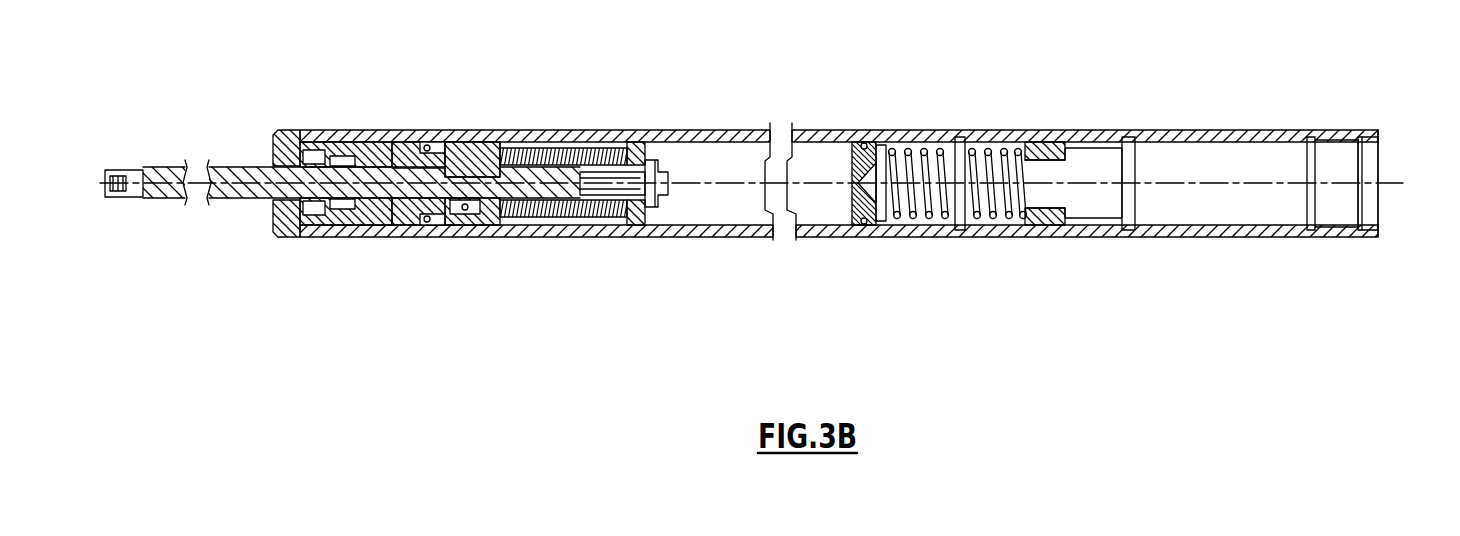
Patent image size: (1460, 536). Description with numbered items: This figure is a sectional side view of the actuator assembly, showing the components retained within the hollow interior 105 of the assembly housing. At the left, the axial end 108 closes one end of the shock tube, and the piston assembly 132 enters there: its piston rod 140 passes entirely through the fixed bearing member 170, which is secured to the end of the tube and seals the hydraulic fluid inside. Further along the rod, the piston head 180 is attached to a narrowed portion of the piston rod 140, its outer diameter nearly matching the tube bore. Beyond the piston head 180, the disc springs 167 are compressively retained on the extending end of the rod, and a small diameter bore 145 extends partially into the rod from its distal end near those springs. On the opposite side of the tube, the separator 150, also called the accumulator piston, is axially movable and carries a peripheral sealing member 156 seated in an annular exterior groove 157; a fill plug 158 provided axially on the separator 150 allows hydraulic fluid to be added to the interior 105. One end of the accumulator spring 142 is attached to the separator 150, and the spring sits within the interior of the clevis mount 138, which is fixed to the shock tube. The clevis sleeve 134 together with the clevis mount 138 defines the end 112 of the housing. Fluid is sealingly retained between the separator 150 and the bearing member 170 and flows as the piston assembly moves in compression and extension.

The hollow interior 105 is at (697, 200).
The axial end 108 is at (275, 240).
The end of the assembly housing 112 is at (1380, 237).
The piston assembly 132 is at (440, 175).
The clevis sleeve 134 is at (1231, 130).
The clevis mount 138 is at (1027, 137).
The piston rod 140 is at (230, 167).
The accumulator spring 142 is at (980, 150).
The small diameter bore 145 is at (630, 150).
The separator 150 is at (871, 178).
The peripheral sealing member 156 is at (866, 143).
The annular exterior groove 157 is at (878, 150).
The fill plug 158 is at (898, 168).
The disc springs 167 is at (540, 214).
The bearing member 170 is at (392, 214).
The piston head 180 is at (462, 190).